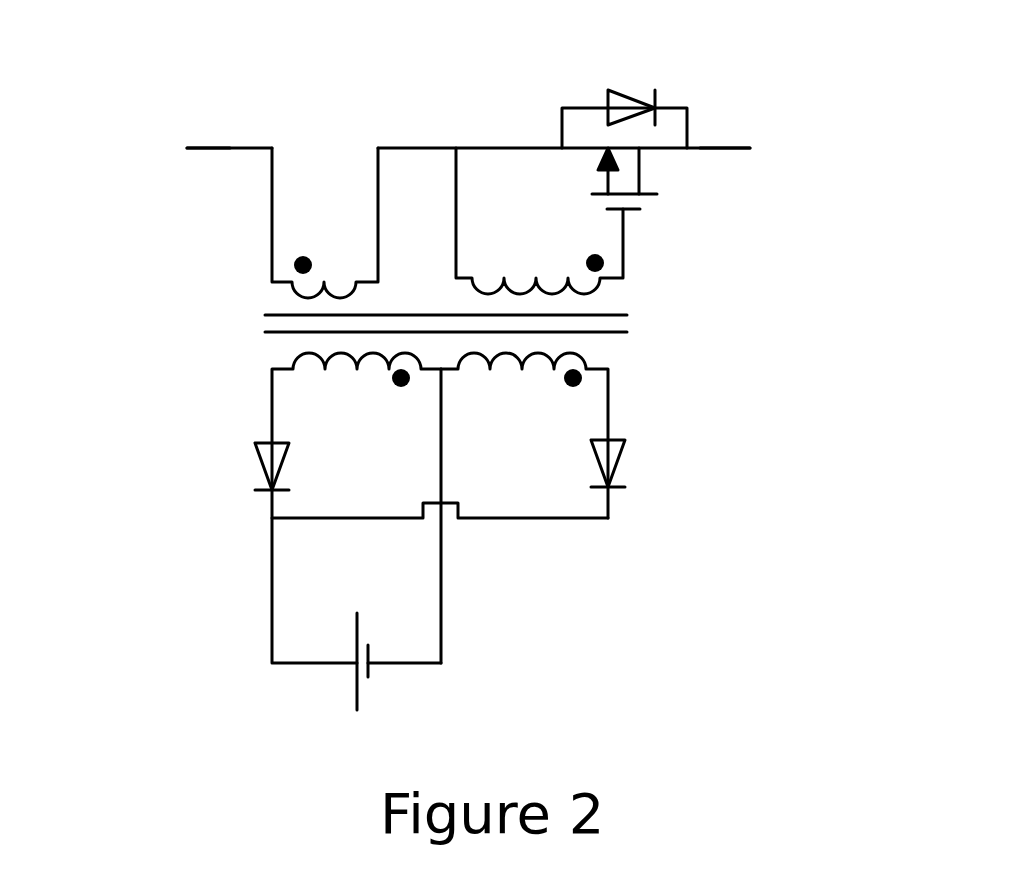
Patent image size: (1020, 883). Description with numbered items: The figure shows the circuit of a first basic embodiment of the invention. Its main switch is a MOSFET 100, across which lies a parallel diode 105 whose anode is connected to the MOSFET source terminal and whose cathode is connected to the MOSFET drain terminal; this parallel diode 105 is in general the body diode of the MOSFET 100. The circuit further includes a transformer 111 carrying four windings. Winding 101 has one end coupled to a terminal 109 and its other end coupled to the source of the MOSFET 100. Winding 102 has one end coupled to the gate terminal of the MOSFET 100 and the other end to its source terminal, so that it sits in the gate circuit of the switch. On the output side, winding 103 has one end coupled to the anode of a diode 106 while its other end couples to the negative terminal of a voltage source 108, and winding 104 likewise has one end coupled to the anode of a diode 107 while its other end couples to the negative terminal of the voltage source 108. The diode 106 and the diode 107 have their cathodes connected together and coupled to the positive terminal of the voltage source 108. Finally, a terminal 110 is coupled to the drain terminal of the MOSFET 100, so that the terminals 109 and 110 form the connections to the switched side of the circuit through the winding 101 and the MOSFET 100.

The MOSFET 100 is at (670, 170).
The winding 101 is at (353, 273).
The winding 102 is at (528, 273).
The winding 103 is at (508, 362).
The winding 104 is at (357, 387).
The parallel diode 105 is at (612, 80).
The diode 106 is at (640, 453).
The diode 107 is at (245, 457).
The voltage source 108 is at (367, 673).
The terminal 109 is at (183, 152).
The terminal 110 is at (743, 123).
The transformer 111 is at (247, 332).